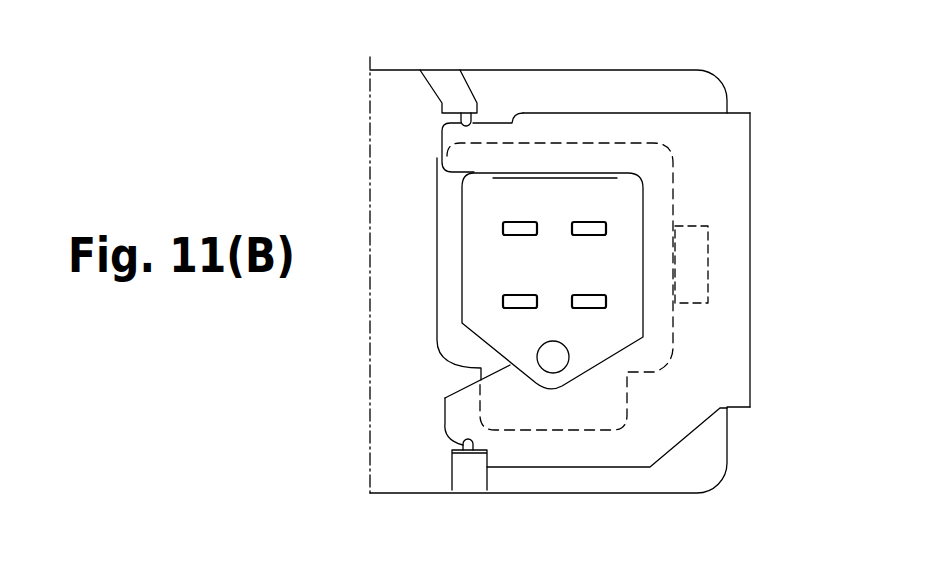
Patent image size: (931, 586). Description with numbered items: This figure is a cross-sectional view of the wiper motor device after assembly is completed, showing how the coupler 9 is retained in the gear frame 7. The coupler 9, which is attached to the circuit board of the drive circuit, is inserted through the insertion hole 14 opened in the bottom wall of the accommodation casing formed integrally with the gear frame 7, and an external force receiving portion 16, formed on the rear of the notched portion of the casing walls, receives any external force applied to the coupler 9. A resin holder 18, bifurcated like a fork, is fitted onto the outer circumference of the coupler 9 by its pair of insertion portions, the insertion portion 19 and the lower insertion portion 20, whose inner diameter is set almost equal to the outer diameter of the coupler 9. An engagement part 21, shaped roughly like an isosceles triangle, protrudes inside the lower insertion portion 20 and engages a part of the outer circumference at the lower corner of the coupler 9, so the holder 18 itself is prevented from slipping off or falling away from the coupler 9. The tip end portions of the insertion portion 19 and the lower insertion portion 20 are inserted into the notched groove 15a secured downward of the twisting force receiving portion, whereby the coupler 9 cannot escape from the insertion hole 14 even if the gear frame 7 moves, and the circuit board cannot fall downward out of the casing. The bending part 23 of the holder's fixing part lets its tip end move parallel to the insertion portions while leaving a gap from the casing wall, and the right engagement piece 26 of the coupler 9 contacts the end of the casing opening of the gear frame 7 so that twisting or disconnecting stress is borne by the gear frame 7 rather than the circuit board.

The gear frame 7 is at (393, 192).
The coupler 9 is at (640, 255).
The insertion hole 14 is at (443, 242).
The notched groove 15a is at (464, 125).
The external force receiving portion 16 is at (597, 127).
The holder 18 is at (762, 248).
The insertion portion 19 is at (447, 157).
The lower insertion portion 20 is at (461, 425).
The engagement part 21 is at (445, 350).
The bending part 23 is at (752, 312).
The right engagement piece 26 is at (693, 263).